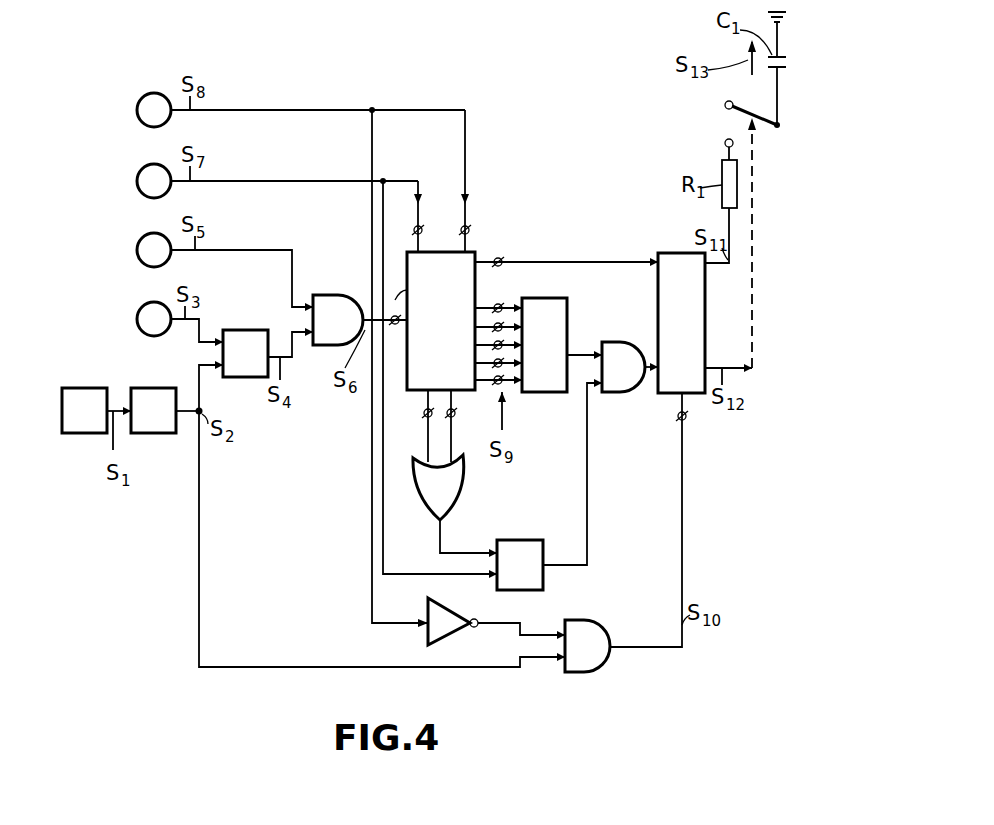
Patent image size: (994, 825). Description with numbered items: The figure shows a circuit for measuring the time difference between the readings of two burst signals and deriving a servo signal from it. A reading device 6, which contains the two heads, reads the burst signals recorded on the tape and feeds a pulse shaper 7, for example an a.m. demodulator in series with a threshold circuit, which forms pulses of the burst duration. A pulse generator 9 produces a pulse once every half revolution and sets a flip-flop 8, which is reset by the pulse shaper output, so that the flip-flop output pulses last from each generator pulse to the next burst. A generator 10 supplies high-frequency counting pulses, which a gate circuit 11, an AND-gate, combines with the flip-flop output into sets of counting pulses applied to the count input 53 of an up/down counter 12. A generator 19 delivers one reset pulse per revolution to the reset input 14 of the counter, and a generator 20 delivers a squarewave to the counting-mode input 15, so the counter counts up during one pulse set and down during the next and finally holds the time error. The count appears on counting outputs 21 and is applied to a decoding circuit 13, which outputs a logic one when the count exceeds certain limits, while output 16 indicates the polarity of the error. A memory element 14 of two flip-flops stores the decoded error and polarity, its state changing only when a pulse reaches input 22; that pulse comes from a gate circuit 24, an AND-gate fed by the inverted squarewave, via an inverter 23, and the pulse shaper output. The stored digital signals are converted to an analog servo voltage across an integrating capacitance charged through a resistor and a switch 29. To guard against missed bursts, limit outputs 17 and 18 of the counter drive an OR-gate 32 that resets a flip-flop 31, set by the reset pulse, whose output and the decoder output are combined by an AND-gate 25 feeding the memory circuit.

The reading device 6 is at (86, 388).
The pulse shaper 7 is at (153, 388).
The flip-flop 8 is at (244, 330).
The pulse generator 9 is at (137, 319).
The generator for counting pulses 10 is at (137, 250).
The gate circuit 11 is at (333, 295).
The up/down counter 12 is at (477, 286).
The decoding circuit 13 is at (548, 290).
The reset input / memory element 14 is at (434, 222).
The counting-mode input 15 is at (480, 222).
The polarity output 16 is at (508, 250).
The upper-limit output 17 is at (424, 414).
The lower-limit output 18 is at (456, 414).
The generator 19 is at (137, 181).
The generator 20 is at (137, 110).
The counting outputs 21 is at (493, 380).
The input 22 is at (688, 416).
The inverter 23 is at (470, 636).
The gate circuit 24 is at (604, 632).
The AND-gate 25 is at (620, 342).
The switch 29 is at (742, 113).
The flip-flop 31 is at (518, 540).
The OR-gate 32 is at (463, 470).
The count input 53 is at (416, 287).